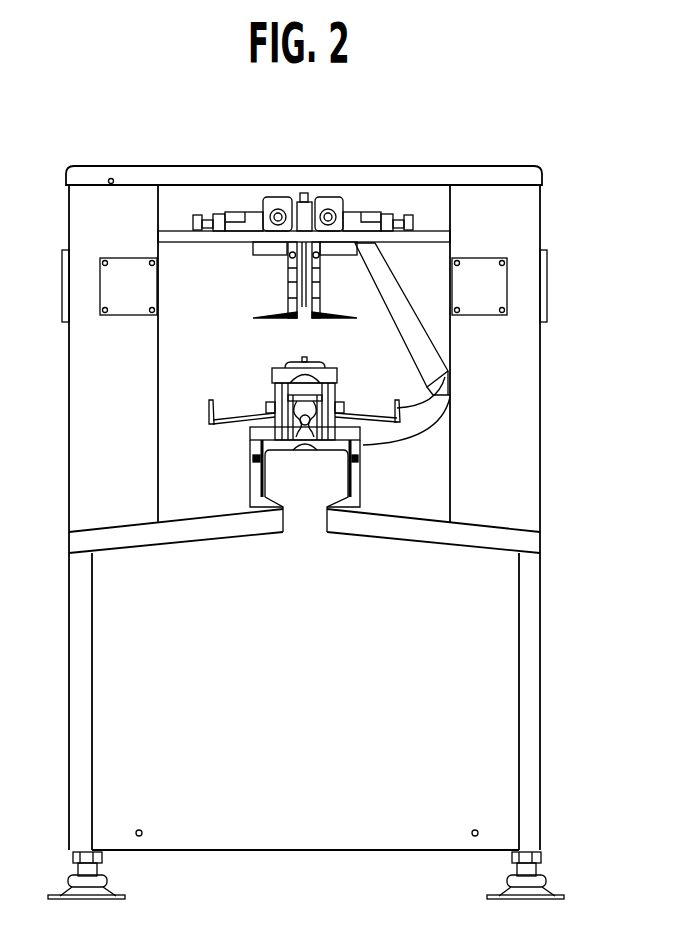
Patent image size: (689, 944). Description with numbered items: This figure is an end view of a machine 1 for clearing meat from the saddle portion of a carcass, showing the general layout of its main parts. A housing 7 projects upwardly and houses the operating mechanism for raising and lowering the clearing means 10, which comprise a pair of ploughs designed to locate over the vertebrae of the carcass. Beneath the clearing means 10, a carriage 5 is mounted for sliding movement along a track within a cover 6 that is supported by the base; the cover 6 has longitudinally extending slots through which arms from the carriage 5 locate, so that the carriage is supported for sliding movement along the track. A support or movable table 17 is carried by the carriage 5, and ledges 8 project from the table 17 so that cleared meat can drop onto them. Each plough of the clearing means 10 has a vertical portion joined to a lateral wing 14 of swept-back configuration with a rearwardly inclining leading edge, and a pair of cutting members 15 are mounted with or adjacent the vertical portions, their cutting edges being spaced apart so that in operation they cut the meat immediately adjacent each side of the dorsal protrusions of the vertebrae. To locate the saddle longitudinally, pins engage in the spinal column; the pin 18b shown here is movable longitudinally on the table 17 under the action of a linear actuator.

The machine 1 is at (437, 138).
The carriage 5 is at (360, 477).
The cover 6 is at (266, 487).
The housing 7 is at (525, 402).
The ledges 8 is at (209, 421).
The clearing means 10 is at (250, 334).
The lateral wing 14 is at (272, 314).
The cutting members 15 is at (302, 300).
The movable table 17 is at (328, 374).
The pin 18b is at (308, 357).